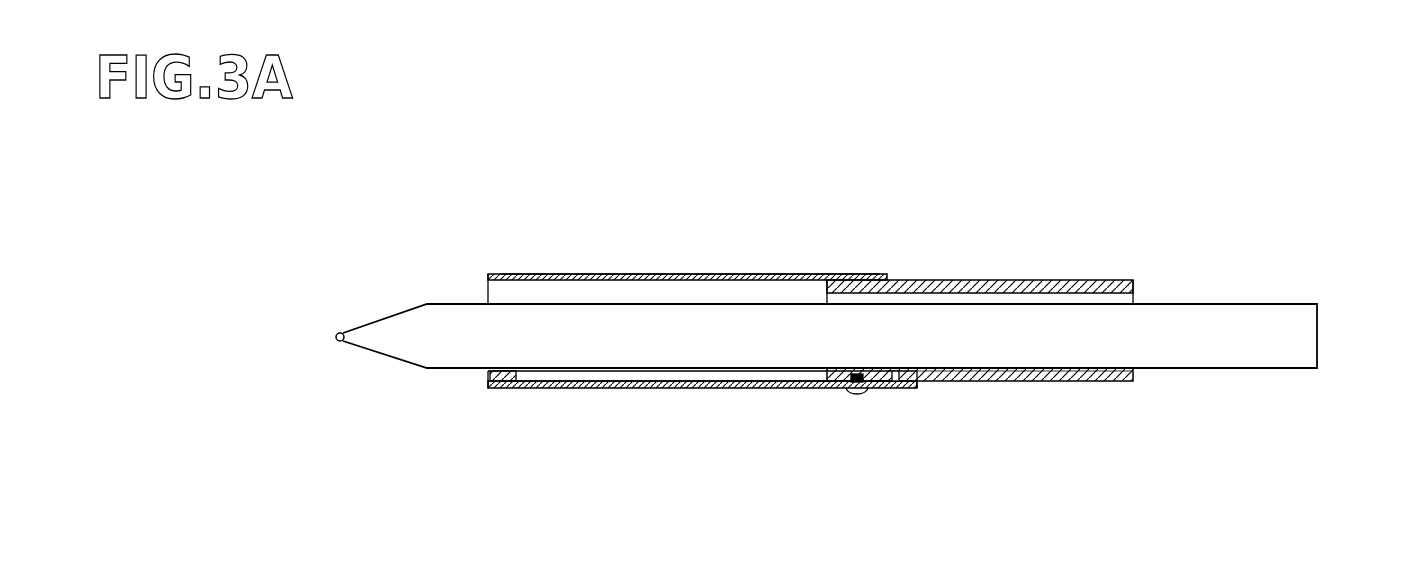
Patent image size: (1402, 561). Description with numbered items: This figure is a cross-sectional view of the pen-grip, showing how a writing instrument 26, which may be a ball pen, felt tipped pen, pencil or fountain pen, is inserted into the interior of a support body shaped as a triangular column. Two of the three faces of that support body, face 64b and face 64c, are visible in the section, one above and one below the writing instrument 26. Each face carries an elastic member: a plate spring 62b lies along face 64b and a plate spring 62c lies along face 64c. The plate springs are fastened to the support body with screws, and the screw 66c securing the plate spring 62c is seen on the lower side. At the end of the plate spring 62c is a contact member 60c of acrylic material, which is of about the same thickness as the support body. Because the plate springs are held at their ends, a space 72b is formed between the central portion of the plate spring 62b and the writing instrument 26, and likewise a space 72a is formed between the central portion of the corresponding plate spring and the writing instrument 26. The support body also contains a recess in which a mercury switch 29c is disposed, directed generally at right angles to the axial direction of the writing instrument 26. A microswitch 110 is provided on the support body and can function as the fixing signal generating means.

The writing instrument 26 is at (1190, 308).
The plate spring 62b is at (686, 277).
The space 72b is at (574, 278).
The face of the support body 64b is at (985, 283).
The plate spring 62c is at (686, 388).
The space 72a is at (571, 370).
The contact member 60c is at (490, 375).
The face of the support body 64c is at (1060, 382).
The mercury switch 29c is at (938, 382).
The microswitch 110 is at (900, 387).
The screw 66c is at (855, 392).